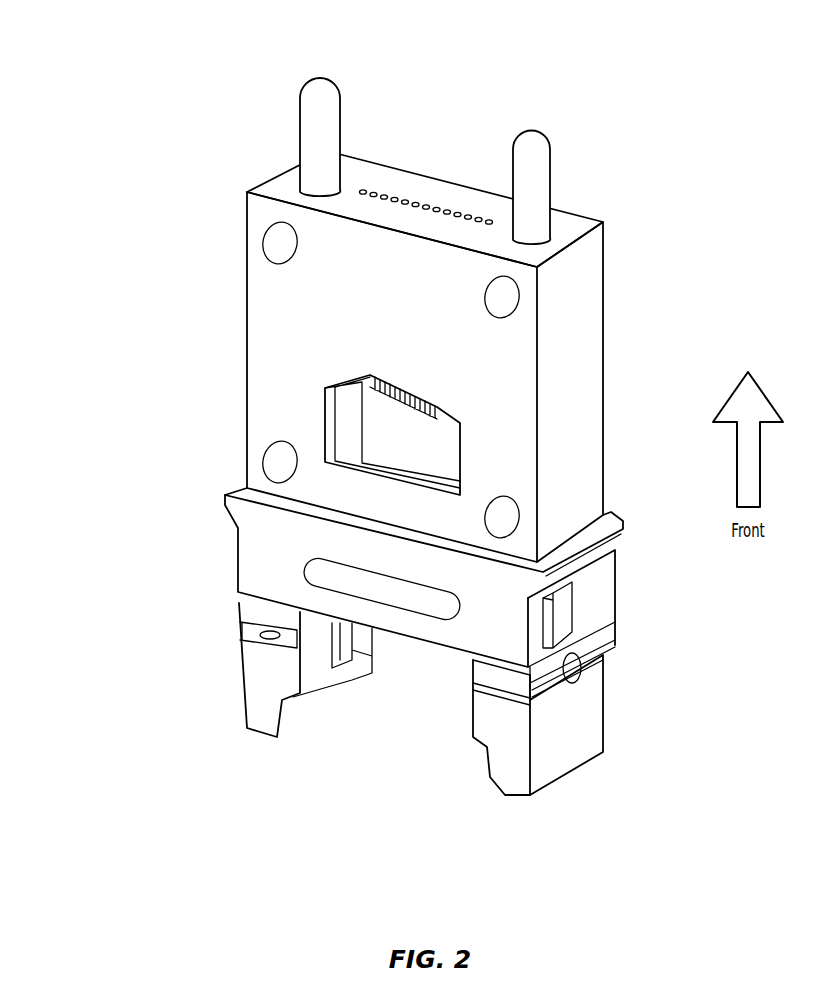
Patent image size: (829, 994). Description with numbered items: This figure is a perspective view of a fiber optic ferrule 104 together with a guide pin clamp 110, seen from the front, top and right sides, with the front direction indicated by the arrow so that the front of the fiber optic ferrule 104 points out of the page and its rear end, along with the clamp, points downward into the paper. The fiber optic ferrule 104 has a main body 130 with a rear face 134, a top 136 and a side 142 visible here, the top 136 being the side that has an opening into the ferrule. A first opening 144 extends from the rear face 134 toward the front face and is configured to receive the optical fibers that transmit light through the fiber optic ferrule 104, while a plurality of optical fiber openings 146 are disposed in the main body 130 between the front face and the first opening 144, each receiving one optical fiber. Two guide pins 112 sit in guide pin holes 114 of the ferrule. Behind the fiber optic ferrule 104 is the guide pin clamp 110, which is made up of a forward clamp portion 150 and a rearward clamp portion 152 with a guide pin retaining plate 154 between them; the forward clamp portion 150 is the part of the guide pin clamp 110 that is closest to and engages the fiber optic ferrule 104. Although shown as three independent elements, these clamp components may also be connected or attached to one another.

The fiber optic ferrule 104 is at (140, 563).
The guide pin clamp 110 is at (225, 597).
The guide pins 112 is at (329, 78).
The guide pin holes 114 is at (548, 243).
The main body 130 is at (590, 417).
The rear face 134 is at (568, 220).
The top 136 is at (262, 350).
The side 142 is at (570, 328).
The first opening 144 is at (413, 440).
The optical fiber openings 146 is at (364, 190).
The forward clamp portion 150 is at (603, 633).
The rearward clamp portion 152 is at (600, 727).
The guide pin retaining plate 154 is at (607, 650).